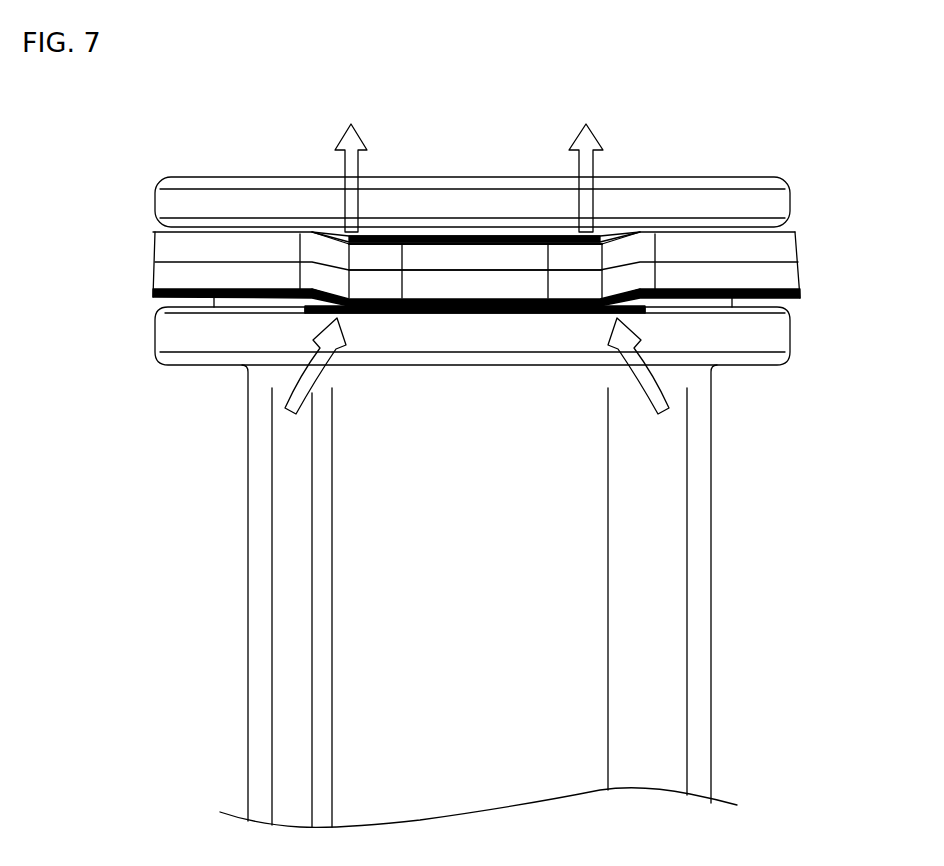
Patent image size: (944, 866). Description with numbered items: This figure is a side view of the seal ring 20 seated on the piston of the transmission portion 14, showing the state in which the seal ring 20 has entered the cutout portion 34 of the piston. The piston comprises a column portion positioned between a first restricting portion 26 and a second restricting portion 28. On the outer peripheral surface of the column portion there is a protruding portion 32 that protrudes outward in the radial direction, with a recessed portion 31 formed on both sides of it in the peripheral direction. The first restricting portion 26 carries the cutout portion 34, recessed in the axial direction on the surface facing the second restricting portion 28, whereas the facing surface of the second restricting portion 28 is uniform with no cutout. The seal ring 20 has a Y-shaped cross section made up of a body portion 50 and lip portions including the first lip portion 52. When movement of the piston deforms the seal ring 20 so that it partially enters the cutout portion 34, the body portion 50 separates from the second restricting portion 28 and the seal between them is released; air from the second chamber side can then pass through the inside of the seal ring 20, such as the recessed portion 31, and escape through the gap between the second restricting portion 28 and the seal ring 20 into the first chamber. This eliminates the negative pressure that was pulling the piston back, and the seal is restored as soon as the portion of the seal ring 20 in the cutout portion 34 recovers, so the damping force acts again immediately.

The transmission portion 14 is at (670, 709).
The seal ring 20 is at (782, 256).
The first restricting portion 26 is at (778, 330).
The second restricting portion 28 is at (770, 203).
The recessed portion 31 is at (340, 237).
The protruding portion 32 is at (397, 260).
The cutout portion 34 is at (570, 316).
The body portion 50 is at (163, 250).
The first lip portion 52 is at (163, 278).